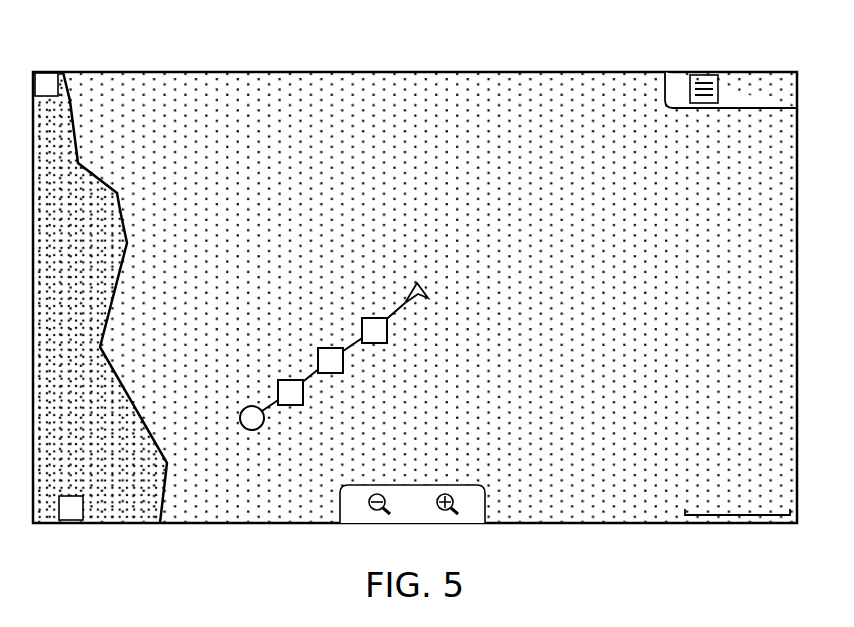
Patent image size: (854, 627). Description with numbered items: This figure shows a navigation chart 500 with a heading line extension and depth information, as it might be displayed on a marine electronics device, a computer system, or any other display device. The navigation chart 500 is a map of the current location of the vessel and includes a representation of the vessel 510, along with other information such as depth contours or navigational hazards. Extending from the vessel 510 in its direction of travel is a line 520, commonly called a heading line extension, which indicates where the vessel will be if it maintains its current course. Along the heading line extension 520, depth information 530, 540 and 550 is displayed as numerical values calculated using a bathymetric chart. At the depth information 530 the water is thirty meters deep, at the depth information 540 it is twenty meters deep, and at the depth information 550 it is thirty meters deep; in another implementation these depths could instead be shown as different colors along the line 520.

The navigation chart 500 is at (457, 110).
The vessel 510 is at (428, 298).
The heading line extension 520 is at (397, 312).
The depth information 530 is at (388, 337).
The depth information 540 is at (328, 373).
The depth information 550 is at (284, 405).